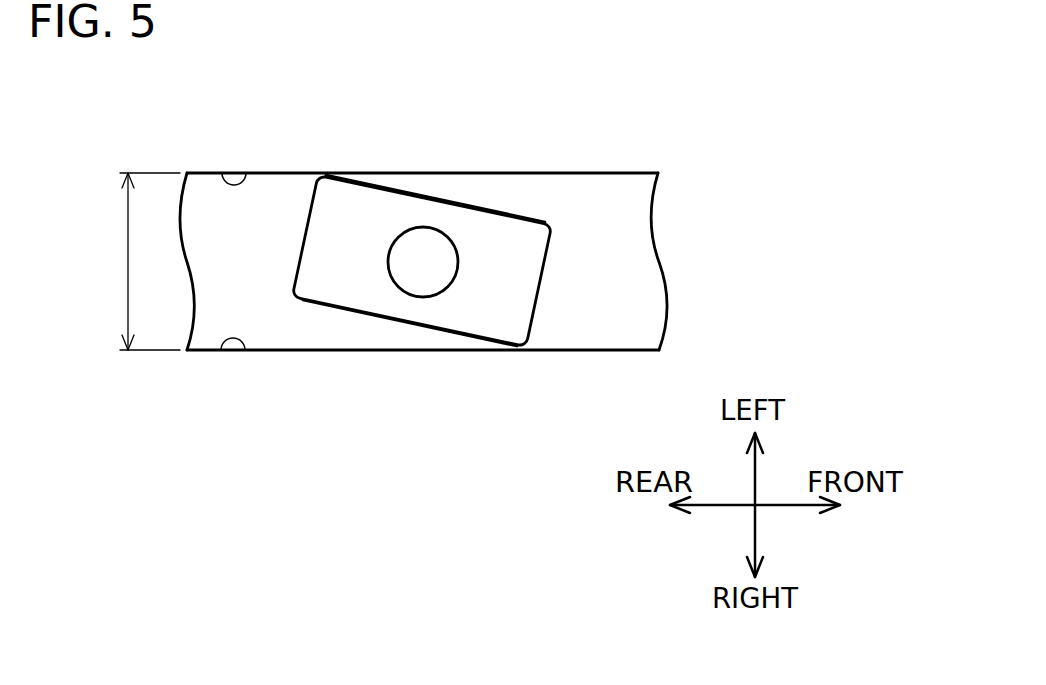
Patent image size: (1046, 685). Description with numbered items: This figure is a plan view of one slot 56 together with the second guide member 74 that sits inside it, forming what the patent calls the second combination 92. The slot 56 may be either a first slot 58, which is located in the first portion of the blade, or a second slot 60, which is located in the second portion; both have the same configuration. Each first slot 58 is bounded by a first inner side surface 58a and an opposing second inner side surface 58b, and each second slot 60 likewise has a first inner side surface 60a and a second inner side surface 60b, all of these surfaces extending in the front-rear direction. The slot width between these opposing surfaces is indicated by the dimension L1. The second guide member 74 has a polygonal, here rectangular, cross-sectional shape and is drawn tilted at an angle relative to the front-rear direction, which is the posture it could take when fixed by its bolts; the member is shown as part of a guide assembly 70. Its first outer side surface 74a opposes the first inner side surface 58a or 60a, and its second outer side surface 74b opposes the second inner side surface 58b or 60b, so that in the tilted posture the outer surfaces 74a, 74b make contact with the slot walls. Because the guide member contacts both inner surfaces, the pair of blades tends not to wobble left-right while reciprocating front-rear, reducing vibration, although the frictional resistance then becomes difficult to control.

The slot 56 is at (342, 252).
The first slot 58 is at (342, 252).
The second slot 60 is at (342, 252).
The first inner side surface 58a is at (422, 129).
The first inner side surface 60a is at (222, 175).
The second inner side surface 58b is at (423, 391).
The second inner side surface 60b is at (223, 350).
The bracket 70 is at (442, 230).
The second guide member 74 is at (442, 230).
The first outer side surface 74a is at (467, 207).
The second outer side surface 74b is at (410, 323).
The second combination 92 is at (421, 160).
The width dimension L1 is at (135, 261).